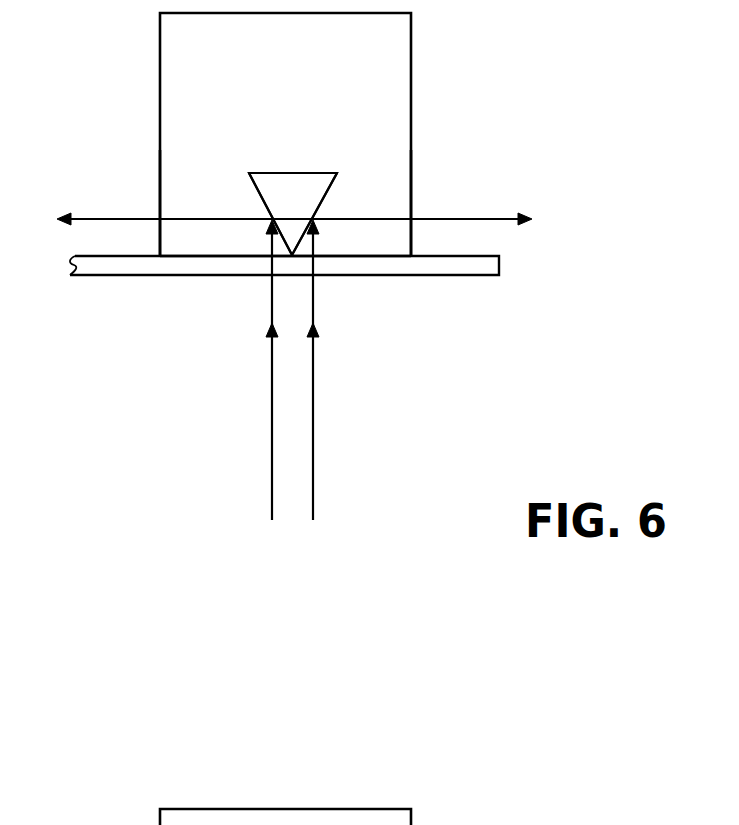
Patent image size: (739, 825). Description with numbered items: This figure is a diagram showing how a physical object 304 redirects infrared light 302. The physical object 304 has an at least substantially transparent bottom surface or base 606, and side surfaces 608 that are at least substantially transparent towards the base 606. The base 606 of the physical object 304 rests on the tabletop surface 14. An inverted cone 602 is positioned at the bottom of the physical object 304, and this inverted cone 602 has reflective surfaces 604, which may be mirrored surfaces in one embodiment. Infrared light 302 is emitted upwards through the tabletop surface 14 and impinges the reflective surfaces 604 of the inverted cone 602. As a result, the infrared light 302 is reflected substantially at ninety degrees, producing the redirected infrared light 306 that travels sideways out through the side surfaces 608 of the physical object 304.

The tabletop surface 14 is at (465, 275).
The infrared light 302 is at (340, 530).
The physical object 304 is at (397, 72).
The redirected infrared light 306 is at (88, 218).
The inverted cone 602 is at (293, 195).
The reflective surfaces 604 is at (255, 192).
The base 606 is at (392, 256).
The side surfaces 608 is at (160, 165).